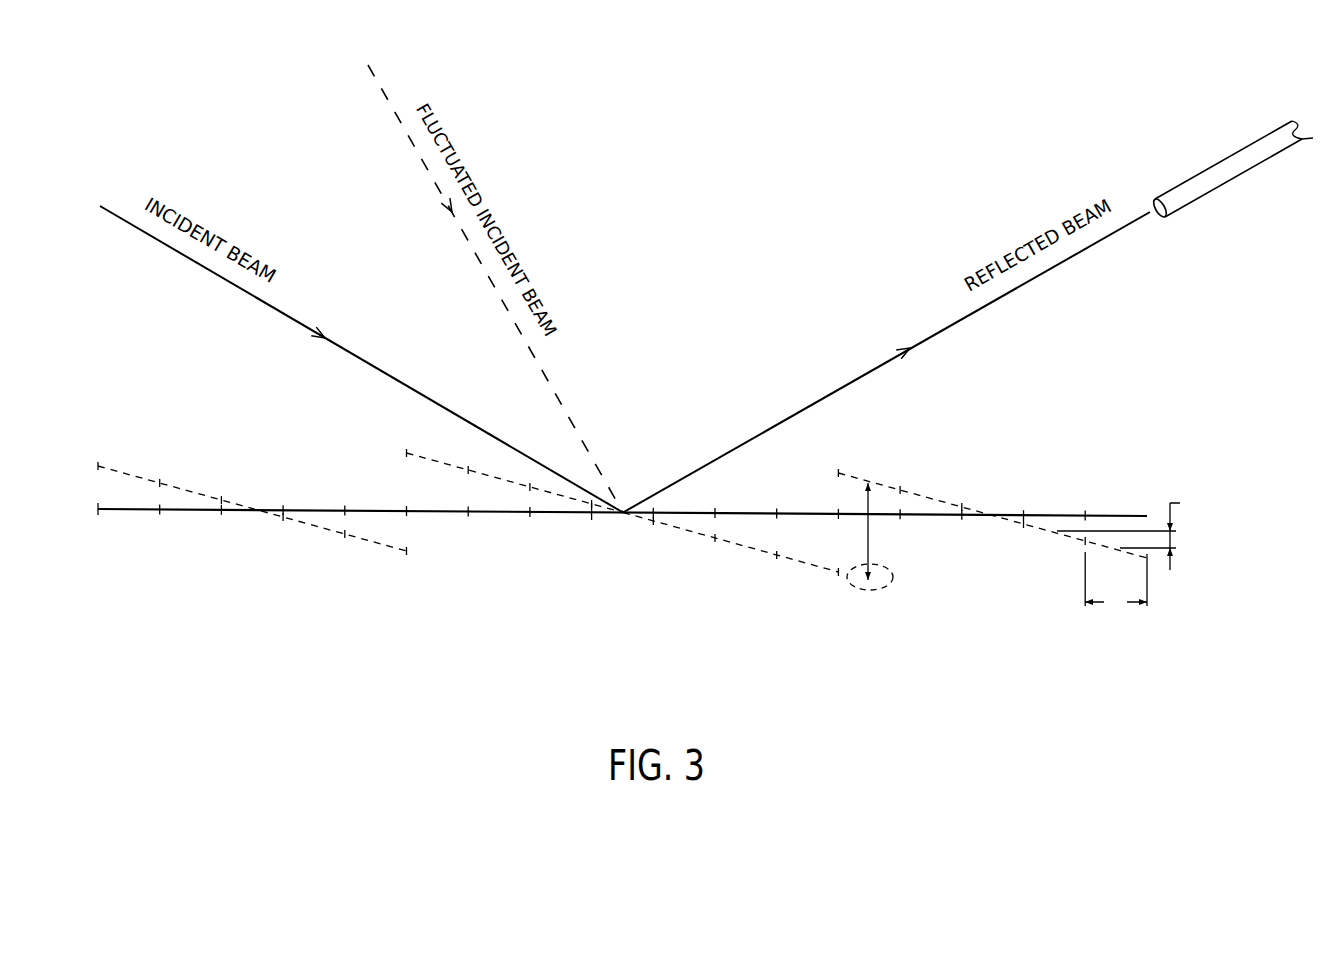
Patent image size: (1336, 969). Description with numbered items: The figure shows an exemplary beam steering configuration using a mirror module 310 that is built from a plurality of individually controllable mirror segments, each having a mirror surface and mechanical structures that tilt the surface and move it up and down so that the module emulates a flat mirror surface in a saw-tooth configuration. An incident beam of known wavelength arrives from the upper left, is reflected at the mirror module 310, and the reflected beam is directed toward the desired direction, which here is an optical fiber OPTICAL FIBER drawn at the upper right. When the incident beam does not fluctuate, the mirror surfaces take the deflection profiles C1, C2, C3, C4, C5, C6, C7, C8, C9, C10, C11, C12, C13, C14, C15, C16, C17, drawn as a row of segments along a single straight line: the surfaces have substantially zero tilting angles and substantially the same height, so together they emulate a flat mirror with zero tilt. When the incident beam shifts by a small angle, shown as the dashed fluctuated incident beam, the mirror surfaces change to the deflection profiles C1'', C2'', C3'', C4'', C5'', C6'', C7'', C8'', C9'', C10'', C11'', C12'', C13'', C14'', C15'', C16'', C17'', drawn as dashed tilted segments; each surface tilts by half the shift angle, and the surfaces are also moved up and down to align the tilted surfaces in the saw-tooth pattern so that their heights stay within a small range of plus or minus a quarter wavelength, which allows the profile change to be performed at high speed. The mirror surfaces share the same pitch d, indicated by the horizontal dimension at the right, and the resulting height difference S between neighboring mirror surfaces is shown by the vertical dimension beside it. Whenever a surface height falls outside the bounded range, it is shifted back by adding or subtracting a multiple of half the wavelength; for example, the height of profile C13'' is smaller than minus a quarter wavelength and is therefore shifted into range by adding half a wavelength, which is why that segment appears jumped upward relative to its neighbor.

The mirror module 310 is at (1040, 91).
The optical fiber OPTICAL FIBER is at (1238, 160).
The height difference S is at (1127, 532).
The pitch d is at (1116, 583).
The deflection profile C1 is at (111, 517).
The deflection profile C2 is at (172, 518).
The deflection profile C3 is at (233, 518).
The deflection profile C4 is at (304, 501).
The deflection profile C5 is at (366, 501).
The deflection profile C6 is at (419, 519).
The deflection profile C7 is at (480, 520).
The deflection profile C8 is at (543, 520).
The deflection profile C9 is at (605, 518).
The deflection profile C10 is at (676, 503).
The deflection profile C11 is at (739, 503).
The deflection profile C12 is at (800, 504).
The deflection profile C13 is at (810, 493).
The deflection profile C14 is at (918, 522).
The deflection profile C15 is at (980, 522).
The deflection profile C16 is at (1047, 505).
The deflection profile C17 is at (1109, 505).
The deflection profile C1'' is at (119, 457).
The deflection profile C2'' is at (181, 475).
The deflection profile C3'' is at (242, 492).
The deflection profile C4'' is at (303, 533).
The deflection profile C5'' is at (376, 550).
The deflection profile C6'' is at (430, 448).
The deflection profile C7'' is at (488, 463).
The deflection profile C8'' is at (533, 495).
The deflection profile C9'' is at (634, 551).
The deflection profile C10'' is at (689, 545).
The deflection profile C11'' is at (751, 563).
The deflection profile C12'' is at (812, 580).
The deflection profile C13'' is at (869, 474).
The deflection profile C14'' is at (941, 491).
The deflection profile C15'' is at (997, 508).
The deflection profile C16'' is at (1053, 549).
The deflection profile C17'' is at (1123, 568).